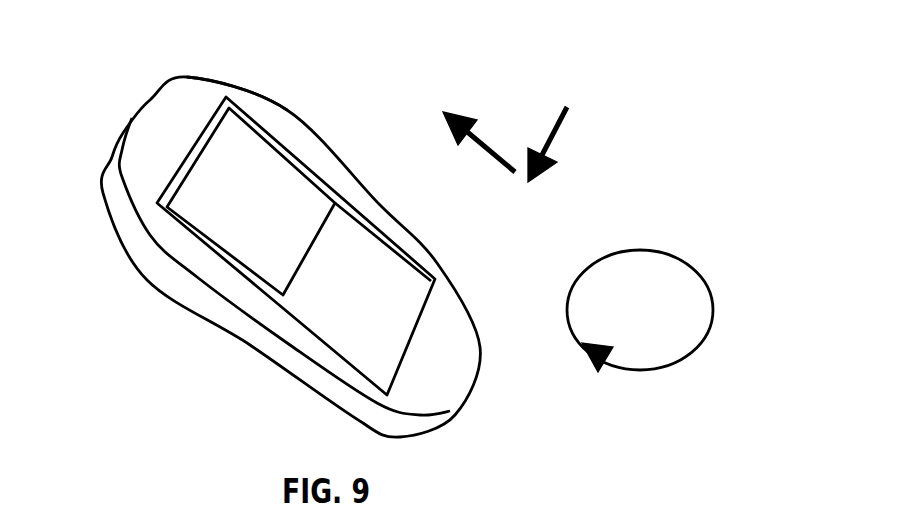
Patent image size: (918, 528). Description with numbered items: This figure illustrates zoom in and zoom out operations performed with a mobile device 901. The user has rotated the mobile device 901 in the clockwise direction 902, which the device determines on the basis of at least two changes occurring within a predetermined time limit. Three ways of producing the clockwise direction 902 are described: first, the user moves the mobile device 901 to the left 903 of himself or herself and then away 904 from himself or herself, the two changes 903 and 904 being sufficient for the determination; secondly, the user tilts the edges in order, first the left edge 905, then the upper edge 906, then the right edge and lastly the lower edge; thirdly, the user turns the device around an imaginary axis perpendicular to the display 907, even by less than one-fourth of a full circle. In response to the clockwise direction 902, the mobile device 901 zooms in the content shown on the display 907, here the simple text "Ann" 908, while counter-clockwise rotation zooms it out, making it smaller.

The mobile device 901 is at (187, 77).
The clockwise direction 902 is at (715, 312).
The movement to the left 903 is at (567, 122).
The movement away 904 is at (462, 112).
The left edge 905 is at (232, 326).
The upper edge 906 is at (135, 117).
The display 907 is at (312, 245).
The text "Ann" 908 is at (270, 147).